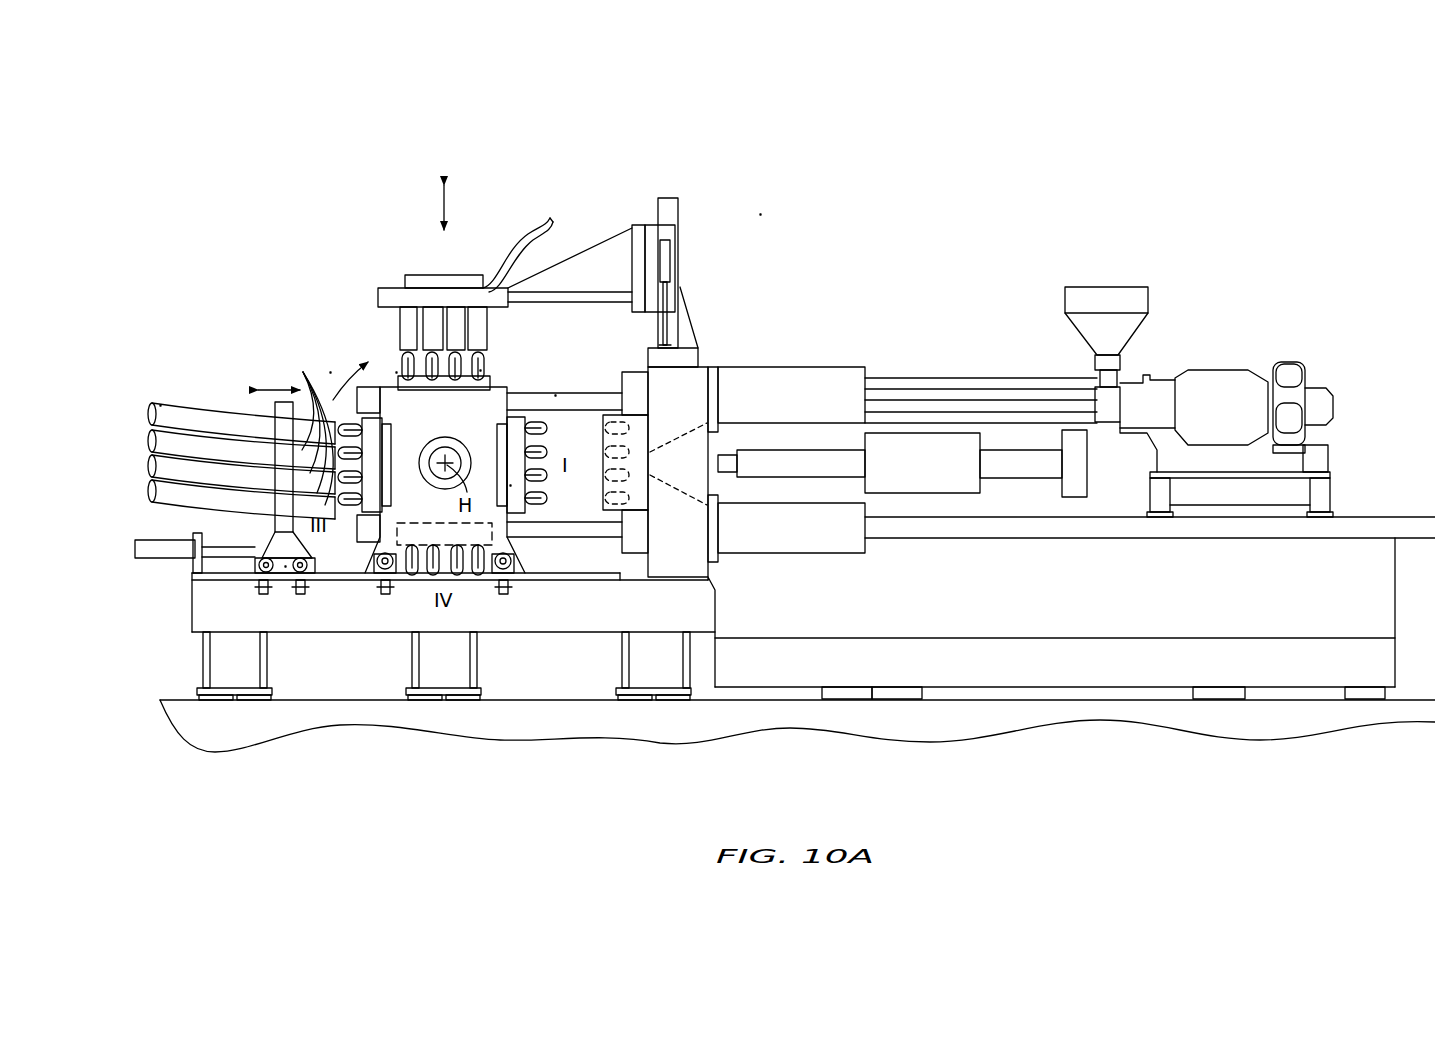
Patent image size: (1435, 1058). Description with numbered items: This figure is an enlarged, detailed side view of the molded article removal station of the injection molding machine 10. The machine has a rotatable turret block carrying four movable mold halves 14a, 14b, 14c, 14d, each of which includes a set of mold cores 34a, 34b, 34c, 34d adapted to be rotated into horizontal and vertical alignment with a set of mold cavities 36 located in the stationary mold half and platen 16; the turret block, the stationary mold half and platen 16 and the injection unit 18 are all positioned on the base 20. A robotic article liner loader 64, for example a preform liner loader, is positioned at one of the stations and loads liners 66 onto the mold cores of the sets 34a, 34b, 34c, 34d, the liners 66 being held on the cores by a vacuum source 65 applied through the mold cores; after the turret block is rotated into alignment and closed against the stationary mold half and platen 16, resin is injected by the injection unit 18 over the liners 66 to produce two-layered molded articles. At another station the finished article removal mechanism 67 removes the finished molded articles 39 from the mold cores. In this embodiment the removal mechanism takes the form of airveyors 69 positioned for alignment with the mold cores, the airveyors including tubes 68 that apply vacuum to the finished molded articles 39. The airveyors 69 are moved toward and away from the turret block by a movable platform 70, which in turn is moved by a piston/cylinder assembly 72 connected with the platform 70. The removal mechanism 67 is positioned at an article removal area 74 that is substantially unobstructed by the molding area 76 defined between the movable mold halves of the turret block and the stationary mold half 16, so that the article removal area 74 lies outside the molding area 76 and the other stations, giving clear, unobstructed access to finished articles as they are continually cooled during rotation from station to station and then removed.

The injection molding machine 10 is at (763, 215).
The movable mold half 14a is at (513, 487).
The movable mold half 14b is at (398, 373).
The movable mold half 14c is at (375, 505).
The movable mold half 14d is at (492, 535).
The stationary mold half and platen 16 is at (692, 378).
The injection unit 18 is at (902, 463).
The base 20 is at (702, 763).
The set of mold cores 34a is at (548, 452).
The set of mold cores 34b is at (478, 360).
The set of mold cores 34c is at (352, 453).
The set of mold cores 34d is at (426, 570).
The set of mold cavities 36 is at (618, 499).
The finished molded articles 39 is at (357, 443).
The robotic article liner loader 64 is at (382, 276).
The vacuum source 65 is at (461, 390).
The liners 66 is at (478, 372).
The finished article removal mechanism 67 is at (195, 402).
The tubes 68 is at (167, 403).
The airveyors 69 is at (295, 428).
The movable platform 70 is at (282, 568).
The piston/cylinder assembly 72 is at (158, 555).
The article removal area 74 is at (332, 373).
The molding area 76 is at (556, 397).